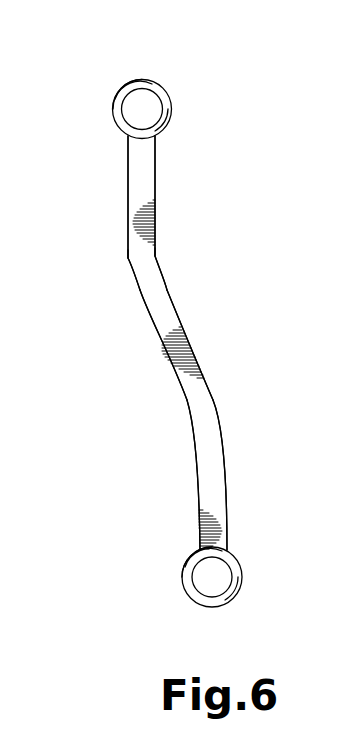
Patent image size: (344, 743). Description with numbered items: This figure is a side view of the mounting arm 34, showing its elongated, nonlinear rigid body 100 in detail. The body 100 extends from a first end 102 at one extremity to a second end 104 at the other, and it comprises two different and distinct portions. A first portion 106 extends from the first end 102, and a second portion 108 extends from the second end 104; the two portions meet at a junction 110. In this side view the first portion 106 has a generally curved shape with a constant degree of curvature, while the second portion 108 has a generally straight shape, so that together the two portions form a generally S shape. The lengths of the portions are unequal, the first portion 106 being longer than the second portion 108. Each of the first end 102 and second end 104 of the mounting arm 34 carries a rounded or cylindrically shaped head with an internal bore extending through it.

The mounting arm 34 is at (224, 269).
The body 100 is at (190, 366).
The first end 102 is at (256, 561).
The second end 104 is at (182, 96).
The first portion 106 is at (215, 478).
The second portion 108 is at (143, 178).
The junction 110 is at (138, 263).